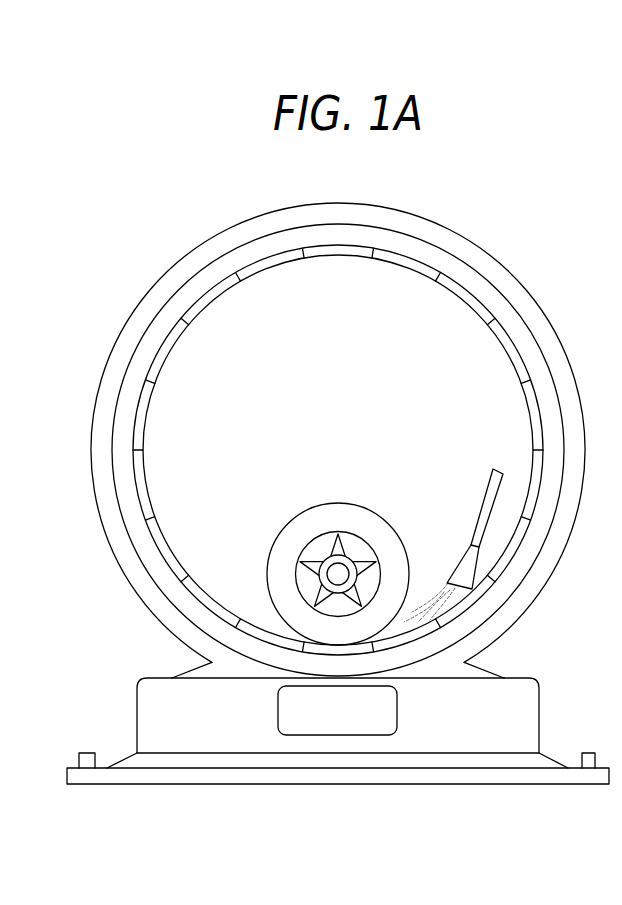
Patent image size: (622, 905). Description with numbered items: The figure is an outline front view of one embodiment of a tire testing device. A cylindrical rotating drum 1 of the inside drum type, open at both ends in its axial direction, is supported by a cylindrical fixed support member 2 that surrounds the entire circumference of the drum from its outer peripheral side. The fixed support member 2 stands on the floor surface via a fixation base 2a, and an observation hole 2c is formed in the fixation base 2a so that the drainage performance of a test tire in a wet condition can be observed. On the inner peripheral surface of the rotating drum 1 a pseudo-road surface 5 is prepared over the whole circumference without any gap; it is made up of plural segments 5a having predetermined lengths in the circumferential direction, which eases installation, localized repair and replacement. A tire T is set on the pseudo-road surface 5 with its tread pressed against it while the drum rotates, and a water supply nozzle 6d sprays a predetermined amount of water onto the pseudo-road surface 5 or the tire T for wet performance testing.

The rotating drum 1 is at (368, 239).
The fixed support member 2 is at (432, 231).
The fixation base 2a is at (497, 715).
The observation hole 2c is at (353, 715).
The pseudo-road surface 5 is at (147, 481).
The segments 5a is at (452, 292).
The water supply nozzle 6d is at (477, 518).
The tire T is at (335, 503).